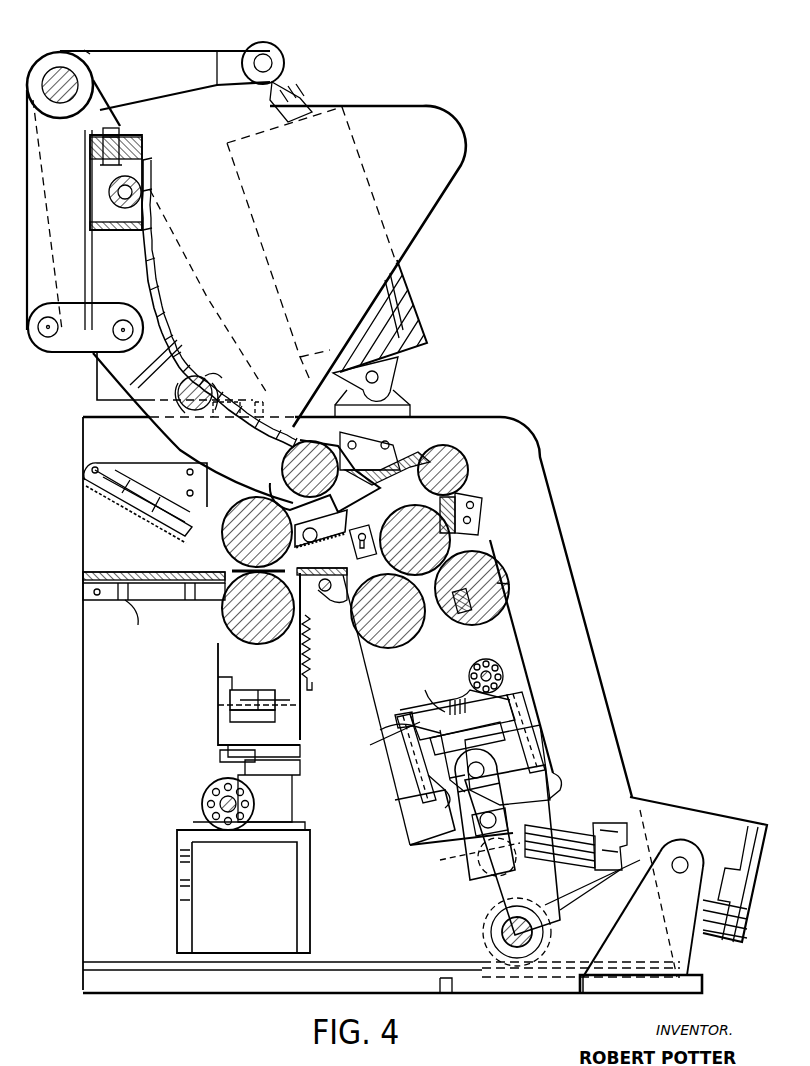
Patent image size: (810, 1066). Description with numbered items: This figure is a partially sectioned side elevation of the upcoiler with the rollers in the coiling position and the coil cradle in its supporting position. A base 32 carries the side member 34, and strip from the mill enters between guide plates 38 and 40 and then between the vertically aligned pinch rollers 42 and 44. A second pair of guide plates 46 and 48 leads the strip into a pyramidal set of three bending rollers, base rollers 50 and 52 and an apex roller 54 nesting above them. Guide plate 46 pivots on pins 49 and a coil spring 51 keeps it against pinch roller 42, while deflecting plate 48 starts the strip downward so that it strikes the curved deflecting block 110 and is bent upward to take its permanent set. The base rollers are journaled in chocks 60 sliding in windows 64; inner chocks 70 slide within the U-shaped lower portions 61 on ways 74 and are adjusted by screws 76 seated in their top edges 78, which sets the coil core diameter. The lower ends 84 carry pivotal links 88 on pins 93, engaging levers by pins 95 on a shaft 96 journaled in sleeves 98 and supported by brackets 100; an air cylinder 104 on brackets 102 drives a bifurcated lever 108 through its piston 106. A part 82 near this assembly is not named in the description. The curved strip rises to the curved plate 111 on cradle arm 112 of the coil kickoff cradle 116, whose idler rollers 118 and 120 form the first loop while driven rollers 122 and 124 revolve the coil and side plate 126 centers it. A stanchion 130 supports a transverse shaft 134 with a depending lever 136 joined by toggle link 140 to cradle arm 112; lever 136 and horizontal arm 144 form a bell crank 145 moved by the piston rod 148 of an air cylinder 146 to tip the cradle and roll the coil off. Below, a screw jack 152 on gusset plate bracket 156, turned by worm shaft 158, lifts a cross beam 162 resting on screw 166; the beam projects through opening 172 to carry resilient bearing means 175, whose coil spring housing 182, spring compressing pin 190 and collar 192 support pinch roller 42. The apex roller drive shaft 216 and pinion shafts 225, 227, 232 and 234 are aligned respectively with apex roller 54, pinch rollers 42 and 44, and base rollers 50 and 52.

The base 32 is at (93, 980).
The side member 34 is at (468, 420).
The guide plate 38 is at (124, 618).
The guide plate 40 is at (100, 462).
The pinch roller 42 is at (238, 621).
The pinch roller 44 is at (252, 500).
The guide plate 46 is at (318, 597).
The guide plate 48 is at (342, 534).
The pins 49 is at (330, 579).
The base roller 50 is at (410, 645).
The coil spring 51 is at (314, 648).
The base roller 52 is at (500, 596).
The apex roller 54 is at (460, 531).
The chock 60 is at (510, 634).
The U-shaped lower portion 61 is at (415, 710).
The window 64 is at (558, 777).
The inner chock 70 is at (513, 744).
The ways 74 is at (522, 699).
The screws 76 is at (445, 699).
The top edges 78 is at (497, 682).
The link 82 is at (410, 726).
The lower ends 84 is at (445, 800).
The pivotal links 88 is at (480, 840).
The pins 93 is at (468, 770).
The pins 95 is at (480, 857).
The shaft 96 is at (540, 912).
The sleeves 98 is at (500, 930).
The brackets 100 is at (548, 940).
The brackets 102 is at (618, 943).
The air cylinder 104 is at (665, 812).
The piston 106 is at (570, 833).
The bifurcated lever 108 is at (495, 885).
The curved deflecting block 110 is at (455, 611).
The curved plate 111 is at (150, 277).
The cradle arm 112 is at (157, 337).
The coil kickoff cradle 116 is at (375, 96).
The idler roller 118 is at (141, 190).
The idler roller 120 is at (196, 377).
The roller 122 is at (312, 450).
The roller 124 is at (458, 470).
The side plate 126 is at (425, 200).
The stanchion 130 is at (105, 388).
The transverse shaft 134 is at (62, 70).
The lever 136 is at (60, 205).
The toggle link 140 is at (62, 340).
The lever 144 is at (152, 62).
The bell crank 145 is at (88, 40).
The air cylinder 146 is at (405, 299).
The piston rod 148 is at (288, 88).
The screw jack 152 is at (250, 765).
The gusset plate bracket 156 is at (180, 866).
The worm shaft 158 is at (214, 804).
The cross beam 162 is at (285, 724).
The screw 166 is at (225, 752).
The opening 172 is at (290, 749).
The resilient bearing means 175 is at (227, 667).
The coil spring housing 182 is at (222, 645).
The spring compressing pin 190 is at (262, 706).
The collar 192 is at (258, 690).
The apex roller drive shaft 216 is at (395, 514).
The pinion shaft 225 is at (225, 606).
The pinion shaft 227 is at (218, 562).
The shaft 232 is at (335, 627).
The shaft 234 is at (519, 577).